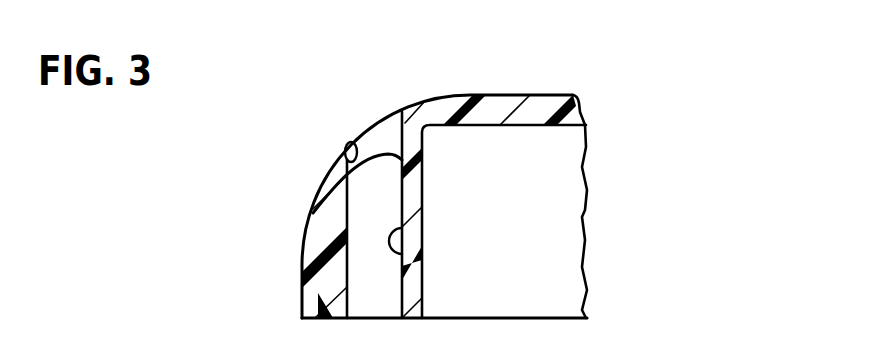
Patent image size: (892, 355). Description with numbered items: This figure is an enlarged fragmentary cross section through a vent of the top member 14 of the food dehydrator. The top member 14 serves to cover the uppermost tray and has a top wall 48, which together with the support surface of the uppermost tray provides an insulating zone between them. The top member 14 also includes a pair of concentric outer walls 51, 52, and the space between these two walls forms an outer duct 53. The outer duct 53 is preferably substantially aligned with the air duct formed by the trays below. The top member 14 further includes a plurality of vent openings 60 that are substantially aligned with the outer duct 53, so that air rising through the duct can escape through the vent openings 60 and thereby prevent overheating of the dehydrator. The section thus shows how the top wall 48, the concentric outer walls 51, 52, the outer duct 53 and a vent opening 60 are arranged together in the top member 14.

The top member 14 is at (603, 125).
The top wall 48 is at (522, 95).
The outer wall 51 is at (400, 220).
The outer wall 52 is at (346, 141).
The outer duct 53 is at (375, 268).
The vent opening 60 is at (369, 142).